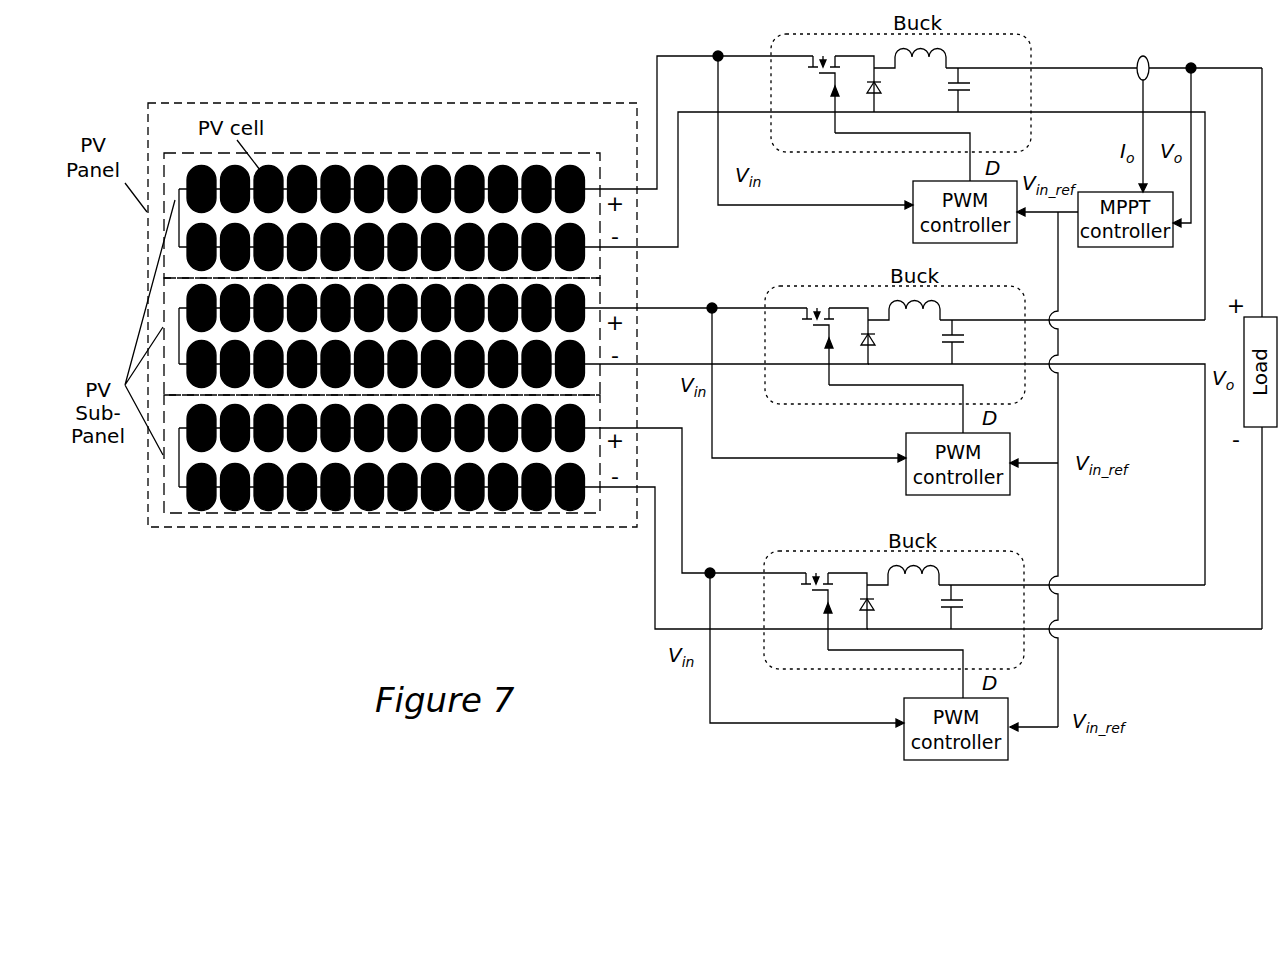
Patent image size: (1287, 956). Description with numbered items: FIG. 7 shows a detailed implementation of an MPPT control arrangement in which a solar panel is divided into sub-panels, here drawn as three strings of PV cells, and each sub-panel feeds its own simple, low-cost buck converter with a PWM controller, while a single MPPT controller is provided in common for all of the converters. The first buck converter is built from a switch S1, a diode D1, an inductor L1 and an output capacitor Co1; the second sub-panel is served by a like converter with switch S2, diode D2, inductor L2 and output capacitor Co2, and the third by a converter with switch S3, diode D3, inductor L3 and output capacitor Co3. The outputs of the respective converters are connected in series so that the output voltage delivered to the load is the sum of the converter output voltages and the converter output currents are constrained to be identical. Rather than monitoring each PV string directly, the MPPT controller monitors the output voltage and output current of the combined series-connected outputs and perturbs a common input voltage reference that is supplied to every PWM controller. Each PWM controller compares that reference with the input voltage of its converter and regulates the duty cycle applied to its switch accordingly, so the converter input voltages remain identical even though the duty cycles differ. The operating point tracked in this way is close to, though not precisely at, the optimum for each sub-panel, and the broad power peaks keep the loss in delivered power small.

The switch of first buck converter S1 is at (834, 94).
The diode of first buck converter D1 is at (891, 87).
The inductor of first buck converter L1 is at (910, 65).
The output capacitor of first buck converter Co1 is at (978, 90).
The switch of second buck converter S2 is at (828, 346).
The diode of second buck converter D2 is at (885, 339).
The inductor of second buck converter L2 is at (904, 317).
The output capacitor of second buck converter Co2 is at (972, 342).
The switch of third buck converter S3 is at (827, 611).
The diode of third buck converter D3 is at (884, 604).
The inductor of third buck converter L3 is at (903, 582).
The output capacitor of third buck converter Co3 is at (971, 607).